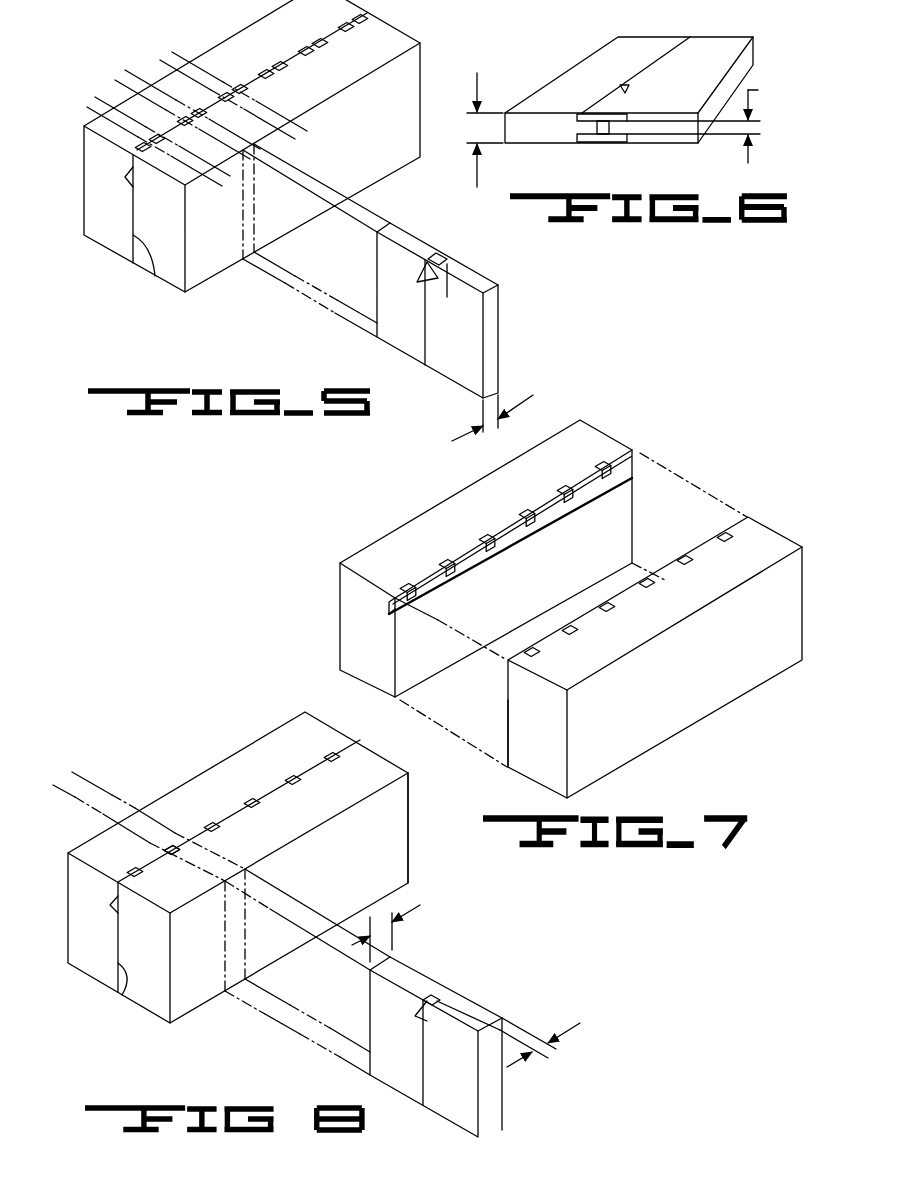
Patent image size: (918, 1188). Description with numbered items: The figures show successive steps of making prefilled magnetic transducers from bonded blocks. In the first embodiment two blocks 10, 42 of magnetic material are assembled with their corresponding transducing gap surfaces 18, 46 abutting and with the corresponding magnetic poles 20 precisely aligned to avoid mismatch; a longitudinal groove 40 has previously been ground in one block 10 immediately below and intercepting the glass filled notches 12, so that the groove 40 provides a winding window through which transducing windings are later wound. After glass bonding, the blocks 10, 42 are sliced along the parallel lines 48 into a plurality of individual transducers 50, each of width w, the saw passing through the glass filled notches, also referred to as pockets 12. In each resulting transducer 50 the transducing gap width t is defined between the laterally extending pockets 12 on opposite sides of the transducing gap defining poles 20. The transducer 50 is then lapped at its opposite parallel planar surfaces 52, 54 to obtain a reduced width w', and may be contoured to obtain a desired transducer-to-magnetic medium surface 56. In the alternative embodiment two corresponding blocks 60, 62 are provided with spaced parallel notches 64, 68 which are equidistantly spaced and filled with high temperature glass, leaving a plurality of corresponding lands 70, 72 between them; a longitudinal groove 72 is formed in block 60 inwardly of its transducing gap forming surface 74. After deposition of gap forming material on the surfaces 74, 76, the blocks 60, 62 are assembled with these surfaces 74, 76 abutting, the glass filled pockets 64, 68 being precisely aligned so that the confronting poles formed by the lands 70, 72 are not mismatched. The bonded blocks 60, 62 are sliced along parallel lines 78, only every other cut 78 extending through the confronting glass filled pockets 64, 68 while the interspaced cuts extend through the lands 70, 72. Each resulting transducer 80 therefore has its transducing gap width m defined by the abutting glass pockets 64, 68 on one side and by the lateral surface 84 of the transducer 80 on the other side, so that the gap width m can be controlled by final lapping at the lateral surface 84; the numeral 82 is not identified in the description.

In FIG. 5, the block 10 is at (103, 242).
In FIG. 5, the glass filled notches 12 is at (327, 53).
In FIG. 6, the glass filled notches 12 is at (593, 110).
In FIG. 5, the transducing gap surface 18 is at (124, 268).
In FIG. 5, the magnetic poles 20 is at (327, 53).
In FIG. 6, the magnetic poles 20 is at (633, 121).
In FIG. 5, the longitudinal groove 40 is at (128, 177).
In FIG. 6, the longitudinal groove 40 is at (626, 85).
In FIG. 5, the block 42 is at (173, 276).
In FIG. 5, the transducing gap surface 46 is at (156, 274).
In FIG. 5, the parallel lines 48 is at (130, 82).
In FIG. 5, the transducer 50 is at (452, 242).
In FIG. 6, the transducer 50 is at (577, 55).
In FIG. 5, the planar surface 52 is at (383, 268).
In FIG. 6, the planar surface 52 is at (753, 70).
In FIG. 5, the planar surface 54 is at (500, 313).
In FIG. 6, the planar surface 54 is at (718, 62).
In FIG. 5, the transducer-to-magnetic medium surface 56 is at (472, 275).
In FIG. 6, the transducer-to-magnetic medium surface 56 is at (560, 144).
In FIG. 7, the block 60 is at (607, 437).
In FIG. 8, the block 60 is at (278, 735).
In FIG. 7, the block 62 is at (766, 532).
In FIG. 8, the block 62 is at (402, 770).
In FIG. 7, the notches 64 is at (487, 535).
In FIG. 8, the notches 64 is at (252, 803).
In FIG. 7, the notches 68 is at (576, 633).
In FIG. 8, the notches 68 is at (220, 829).
In FIG. 7, the lands 70 is at (567, 487).
In FIG. 8, the lands 70 is at (191, 845).
In FIG. 7, the lands 72 is at (389, 612).
In FIG. 8, the lands 72 is at (191, 845).
In FIG. 7, the transducing gap forming surface 74 is at (560, 574).
In FIG. 8, the transducing gap forming surface 74 is at (97, 957).
In FIG. 7, the transducing gap forming surface 76 is at (506, 712).
In FIG. 8, the transducing gap forming surface 76 is at (122, 995).
In FIG. 8, the parallel lines 78 is at (76, 785).
In FIG. 8, the transducer 80 is at (470, 972).
In FIG. 8, the first slice portion 82 is at (372, 1004).
In FIG. 8, the lateral surface 84 is at (504, 1088).